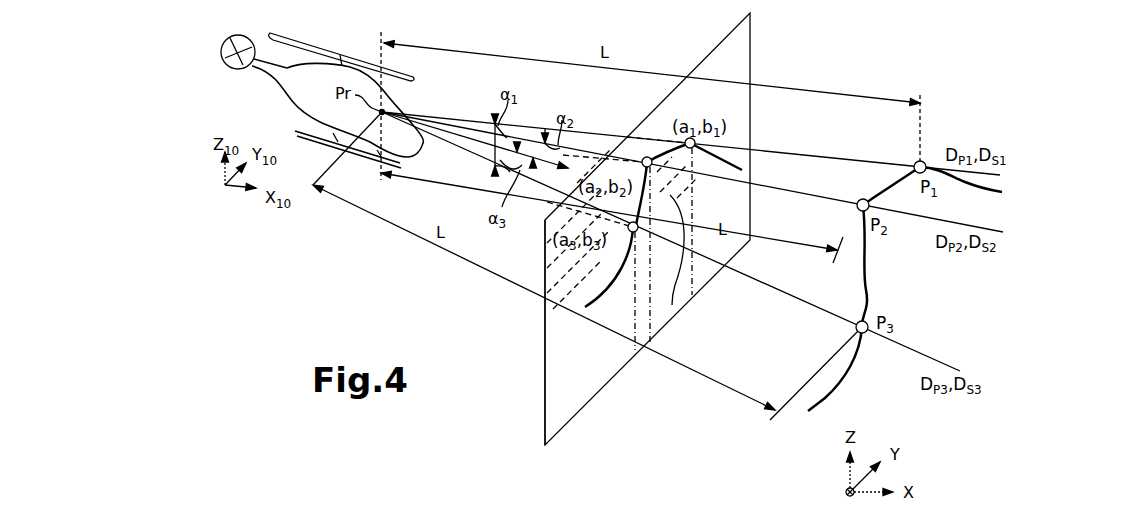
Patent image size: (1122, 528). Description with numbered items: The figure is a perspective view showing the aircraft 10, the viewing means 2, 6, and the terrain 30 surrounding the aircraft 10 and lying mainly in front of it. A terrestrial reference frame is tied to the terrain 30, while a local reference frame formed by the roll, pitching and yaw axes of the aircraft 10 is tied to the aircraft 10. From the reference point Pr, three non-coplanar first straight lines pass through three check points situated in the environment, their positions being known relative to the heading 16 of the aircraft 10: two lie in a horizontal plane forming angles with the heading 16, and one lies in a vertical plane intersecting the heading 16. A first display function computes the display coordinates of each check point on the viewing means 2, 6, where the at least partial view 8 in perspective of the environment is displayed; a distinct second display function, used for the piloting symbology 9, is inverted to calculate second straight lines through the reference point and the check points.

The viewing means 2 is at (545, 418).
The viewing means 6 is at (511, 332).
The at least partial view in perspective of the environment 8 is at (598, 302).
The piloting symbology 9 is at (672, 305).
The aircraft 10 is at (283, 221).
The heading 16 is at (545, 214).
The terrain 30 is at (866, 264).